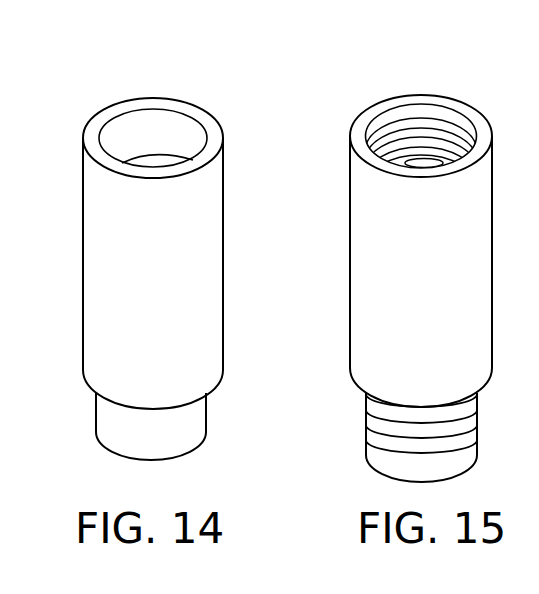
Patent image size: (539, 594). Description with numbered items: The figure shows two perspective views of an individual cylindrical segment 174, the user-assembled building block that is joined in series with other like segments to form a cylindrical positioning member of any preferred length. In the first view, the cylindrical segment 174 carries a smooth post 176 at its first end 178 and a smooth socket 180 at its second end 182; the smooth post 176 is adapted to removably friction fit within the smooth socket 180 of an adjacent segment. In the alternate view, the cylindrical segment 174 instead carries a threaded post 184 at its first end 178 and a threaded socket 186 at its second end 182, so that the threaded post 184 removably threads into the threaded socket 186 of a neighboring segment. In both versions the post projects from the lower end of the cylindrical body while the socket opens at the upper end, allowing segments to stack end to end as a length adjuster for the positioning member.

In FIG. 14, the cylindrical segment 174 is at (154, 68).
In FIG. 15, the cylindrical segment 174 is at (320, 319).
In FIG. 14, the smooth post 176 is at (207, 410).
In FIG. 15, the smooth post 176 is at (421, 387).
In FIG. 14, the first end 178 is at (118, 436).
In FIG. 15, the first end 178 is at (382, 472).
In FIG. 14, the smooth socket 180 is at (195, 148).
In FIG. 14, the second end 182 is at (105, 104).
In FIG. 15, the second end 182 is at (393, 97).
In FIG. 15, the threaded post 184 is at (477, 414).
In FIG. 15, the threaded socket 186 is at (427, 133).